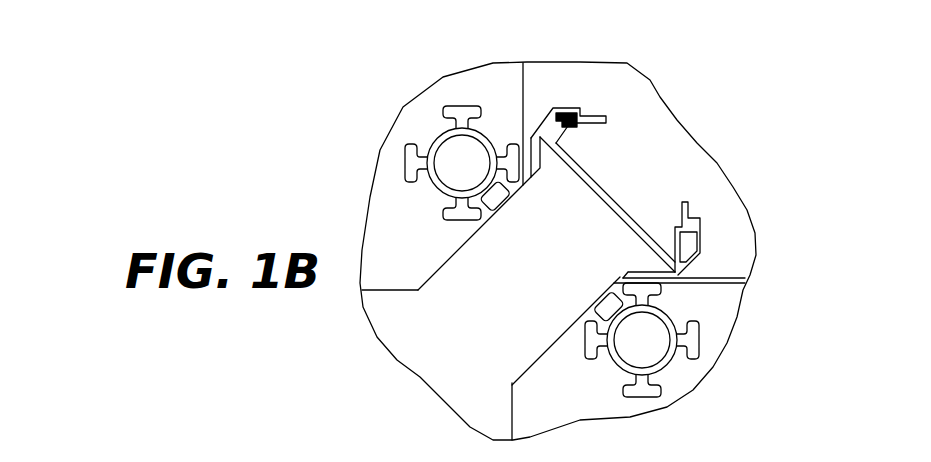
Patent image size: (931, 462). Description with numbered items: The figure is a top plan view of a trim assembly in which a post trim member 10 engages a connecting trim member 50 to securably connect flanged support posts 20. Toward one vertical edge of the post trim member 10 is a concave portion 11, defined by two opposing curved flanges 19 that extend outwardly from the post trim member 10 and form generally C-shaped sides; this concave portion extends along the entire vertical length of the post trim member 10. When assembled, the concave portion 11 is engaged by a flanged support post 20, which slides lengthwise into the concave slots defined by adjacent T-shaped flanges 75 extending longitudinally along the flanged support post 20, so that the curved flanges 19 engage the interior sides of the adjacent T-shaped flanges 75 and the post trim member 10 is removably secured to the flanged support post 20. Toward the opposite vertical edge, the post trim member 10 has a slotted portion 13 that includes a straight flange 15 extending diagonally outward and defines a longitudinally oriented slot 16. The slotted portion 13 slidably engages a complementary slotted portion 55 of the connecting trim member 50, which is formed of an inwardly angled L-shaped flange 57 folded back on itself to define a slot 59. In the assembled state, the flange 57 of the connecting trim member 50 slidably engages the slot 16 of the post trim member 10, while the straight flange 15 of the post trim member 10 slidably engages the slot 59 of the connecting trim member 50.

The post trim member 10 is at (622, 271).
The concave portion 11 is at (596, 303).
The slotted portion 13 is at (550, 107).
The straight flange 15 is at (702, 230).
The slot 16 is at (577, 107).
The curved flanges 19 is at (494, 215).
The flanged support post 20 is at (690, 377).
The connecting trim member 50 is at (603, 186).
The slotted portion 55 is at (666, 229).
The L-shaped flange 57 is at (578, 124).
The slot 59 is at (551, 134).
The T-shaped flanges 75 is at (452, 202).